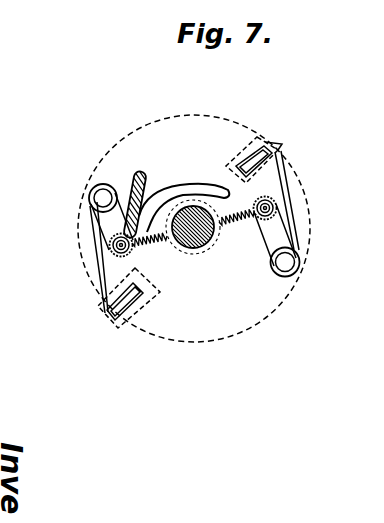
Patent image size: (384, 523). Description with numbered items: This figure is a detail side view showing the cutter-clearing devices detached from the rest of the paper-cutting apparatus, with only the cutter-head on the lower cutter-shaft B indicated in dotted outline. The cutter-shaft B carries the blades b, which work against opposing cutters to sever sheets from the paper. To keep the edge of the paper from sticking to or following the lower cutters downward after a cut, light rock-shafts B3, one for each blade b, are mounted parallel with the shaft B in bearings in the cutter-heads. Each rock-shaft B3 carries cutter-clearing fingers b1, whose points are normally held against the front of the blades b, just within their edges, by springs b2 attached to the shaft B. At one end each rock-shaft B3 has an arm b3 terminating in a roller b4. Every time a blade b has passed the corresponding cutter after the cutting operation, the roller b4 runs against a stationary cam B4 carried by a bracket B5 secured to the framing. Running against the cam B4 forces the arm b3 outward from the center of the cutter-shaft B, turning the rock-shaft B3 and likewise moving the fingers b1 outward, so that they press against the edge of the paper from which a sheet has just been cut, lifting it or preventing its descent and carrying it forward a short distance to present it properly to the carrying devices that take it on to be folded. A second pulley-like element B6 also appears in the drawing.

The cutter-shaft B is at (189, 253).
The rock-shaft B3 is at (100, 196).
The stationary cam B4 is at (157, 163).
The bracket B5 is at (130, 173).
The right pulley B6 is at (290, 272).
The blade b is at (115, 317).
The cutter-clearing finger b1 is at (98, 280).
The spring b2 is at (170, 248).
The arm b3 is at (110, 228).
The roller b4 is at (112, 255).